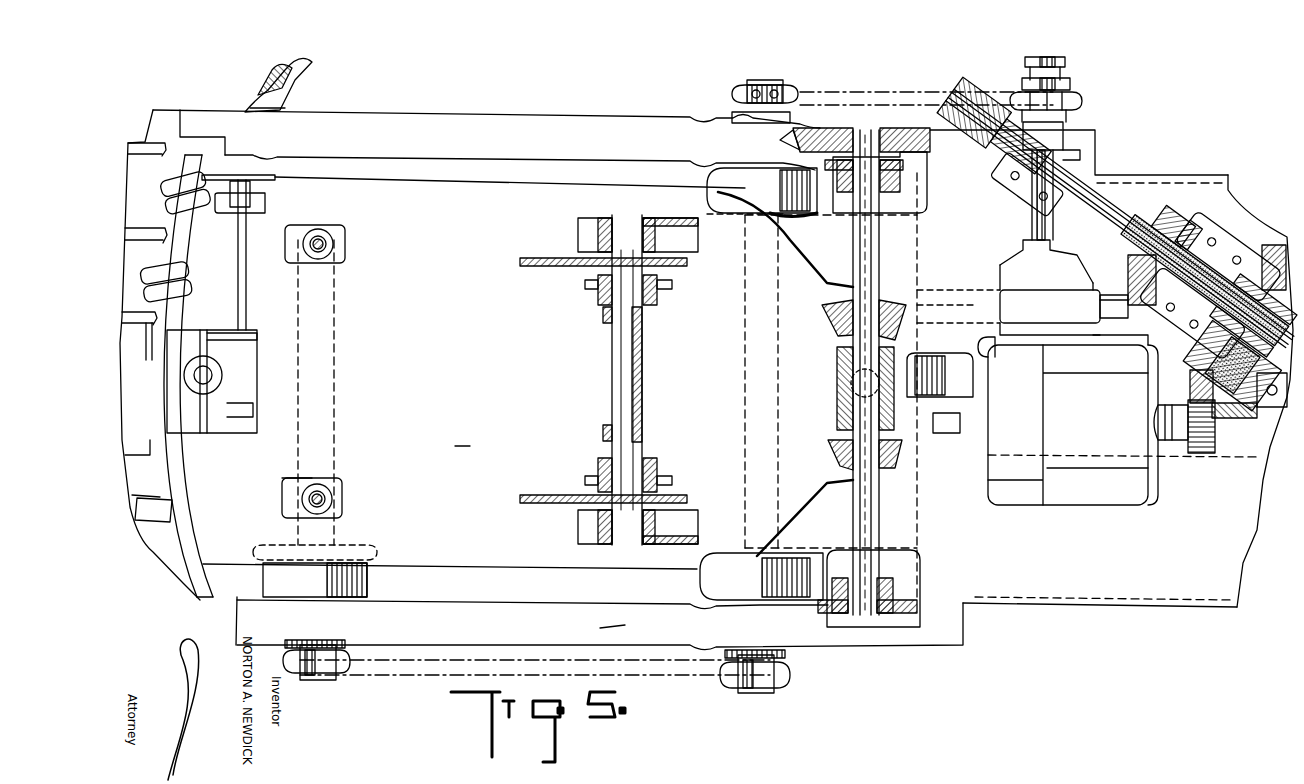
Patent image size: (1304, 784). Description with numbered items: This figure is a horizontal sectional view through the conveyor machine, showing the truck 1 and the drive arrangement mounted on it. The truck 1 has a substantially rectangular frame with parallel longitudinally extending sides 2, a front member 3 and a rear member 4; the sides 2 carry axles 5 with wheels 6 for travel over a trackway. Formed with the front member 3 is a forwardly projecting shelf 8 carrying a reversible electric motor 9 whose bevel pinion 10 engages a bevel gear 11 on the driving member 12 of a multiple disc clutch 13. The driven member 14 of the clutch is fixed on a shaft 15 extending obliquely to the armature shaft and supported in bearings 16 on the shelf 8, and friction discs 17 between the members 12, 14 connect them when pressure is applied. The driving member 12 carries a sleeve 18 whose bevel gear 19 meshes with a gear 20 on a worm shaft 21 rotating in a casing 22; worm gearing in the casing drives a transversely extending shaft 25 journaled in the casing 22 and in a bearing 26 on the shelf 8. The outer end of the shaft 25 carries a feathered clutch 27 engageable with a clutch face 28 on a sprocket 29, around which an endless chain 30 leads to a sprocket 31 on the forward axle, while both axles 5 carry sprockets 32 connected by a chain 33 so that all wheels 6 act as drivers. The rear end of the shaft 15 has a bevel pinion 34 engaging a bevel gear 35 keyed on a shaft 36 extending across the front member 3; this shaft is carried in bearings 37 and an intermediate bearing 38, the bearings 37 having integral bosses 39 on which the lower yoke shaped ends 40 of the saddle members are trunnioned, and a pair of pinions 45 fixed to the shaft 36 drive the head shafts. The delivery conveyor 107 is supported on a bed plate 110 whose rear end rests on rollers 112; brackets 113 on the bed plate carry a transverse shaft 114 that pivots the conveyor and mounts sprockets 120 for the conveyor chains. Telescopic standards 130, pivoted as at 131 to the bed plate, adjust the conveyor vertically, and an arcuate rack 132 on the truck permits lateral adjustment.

The truck 1 is at (612, 617).
The sides 2 is at (607, 380).
The front member 3 is at (905, 240).
The rear member 4 is at (172, 355).
The axles 5 is at (328, 390).
The wheels 6 is at (375, 565).
The shelf 8 is at (1030, 598).
The electric motor 9 is at (1080, 485).
The bevel pinion 10 is at (1203, 455).
The bevel gear 11 is at (1205, 393).
The driving member 12 is at (1160, 415).
The multiple disc clutch 13 is at (1205, 370).
The driven member 14 is at (1272, 237).
The shaft 15 is at (1200, 232).
The bearings 16 is at (1000, 118).
The friction discs 17 is at (1249, 404).
The sleeve 18 is at (1130, 270).
The bevel gear 19 is at (1162, 228).
The gear 20 is at (1120, 351).
The worm shaft 21 is at (1097, 330).
The casing 22 is at (1008, 281).
The transversely extending shaft 25 is at (1033, 213).
The bearing 26 is at (1075, 130).
The feathered clutch 27 is at (1067, 62).
The clutch face 28 is at (1072, 85).
The sprocket 29 is at (1085, 100).
The endless chain 30 is at (822, 95).
The sprocket 31 is at (742, 90).
The sprockets 32 is at (320, 676).
The chain 33 is at (405, 678).
The bevel pinion 34 is at (952, 92).
The bevel gear 35 is at (766, 139).
The shaft 36 is at (882, 266).
The bearings 37 is at (920, 200).
The intermediate bearing 38 is at (905, 378).
The bosses 39 is at (880, 190).
The yoke shaped ends 40 is at (800, 240).
The pinions 45 is at (832, 320).
The delivery conveyor 107 is at (527, 262).
The bed plate 110 is at (461, 440).
The rollers 112 is at (285, 72).
The brackets 113 is at (590, 222).
The shaft 114 is at (622, 403).
The sprockets 120 is at (672, 281).
The telescopic standards 130 is at (335, 248).
The pivot 131 is at (297, 483).
The arcuate rack 132 is at (185, 500).